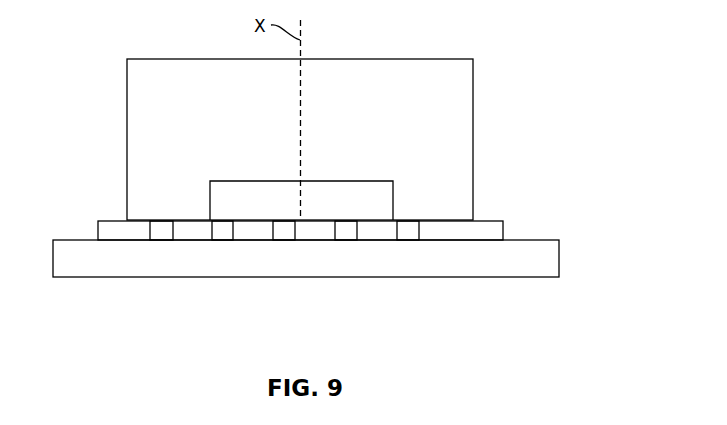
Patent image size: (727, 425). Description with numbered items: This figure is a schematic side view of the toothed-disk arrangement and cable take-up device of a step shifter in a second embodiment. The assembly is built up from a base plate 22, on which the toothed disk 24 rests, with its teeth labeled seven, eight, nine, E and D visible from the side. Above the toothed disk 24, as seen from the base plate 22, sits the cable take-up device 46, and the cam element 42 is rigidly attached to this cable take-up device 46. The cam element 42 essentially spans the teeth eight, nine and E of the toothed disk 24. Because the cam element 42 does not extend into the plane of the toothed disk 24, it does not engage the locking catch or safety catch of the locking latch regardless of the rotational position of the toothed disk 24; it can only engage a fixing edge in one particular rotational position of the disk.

The cable take-up device 46 is at (450, 115).
The cam element 42 is at (267, 202).
The toothed disk 24 is at (493, 230).
The base plate 22 is at (544, 265).